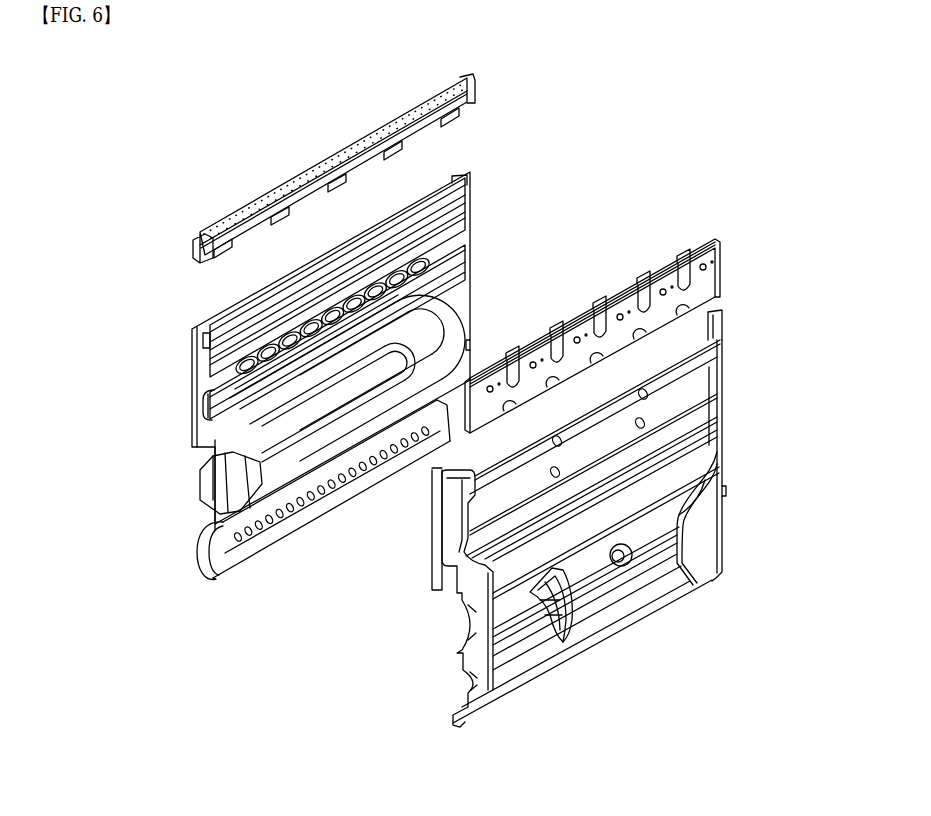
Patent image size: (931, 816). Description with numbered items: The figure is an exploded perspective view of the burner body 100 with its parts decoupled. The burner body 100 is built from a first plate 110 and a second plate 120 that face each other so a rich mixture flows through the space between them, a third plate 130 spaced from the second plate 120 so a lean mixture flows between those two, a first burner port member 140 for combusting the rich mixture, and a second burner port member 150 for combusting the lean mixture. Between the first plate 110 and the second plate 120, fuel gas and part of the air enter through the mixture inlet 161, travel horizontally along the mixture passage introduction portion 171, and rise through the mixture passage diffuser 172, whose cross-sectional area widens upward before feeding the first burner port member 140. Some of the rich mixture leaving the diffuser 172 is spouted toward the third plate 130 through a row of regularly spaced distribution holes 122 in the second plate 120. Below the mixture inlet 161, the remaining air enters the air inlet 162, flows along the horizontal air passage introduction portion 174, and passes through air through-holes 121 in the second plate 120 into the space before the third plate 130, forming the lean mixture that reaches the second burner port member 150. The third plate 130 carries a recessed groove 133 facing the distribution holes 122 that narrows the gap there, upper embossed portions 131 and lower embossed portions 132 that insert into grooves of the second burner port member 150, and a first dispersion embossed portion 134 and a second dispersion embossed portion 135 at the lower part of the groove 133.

The burner body 100 is at (191, 100).
The first plate 110 is at (203, 320).
The second plate 120 is at (250, 301).
The air through-holes 121 is at (280, 524).
The distribution holes 122 is at (210, 397).
The third plate 130 is at (432, 685).
The upper embossed portions 131 is at (650, 398).
The lower embossed portions 132 is at (648, 428).
The recessed groove 133 is at (672, 455).
The first dispersion embossed portion 134 is at (630, 565).
The second dispersion embossed portion 135 is at (575, 605).
The first burner port member 140 is at (172, 258).
The second burner port member 150 is at (720, 268).
The mixture inlet 161 is at (205, 490).
The air inlet 162 is at (205, 554).
The mixture passage introduction portion 171 is at (297, 448).
The mixture passage diffuser 172 is at (393, 334).
The air passage introduction portion 174 is at (380, 470).